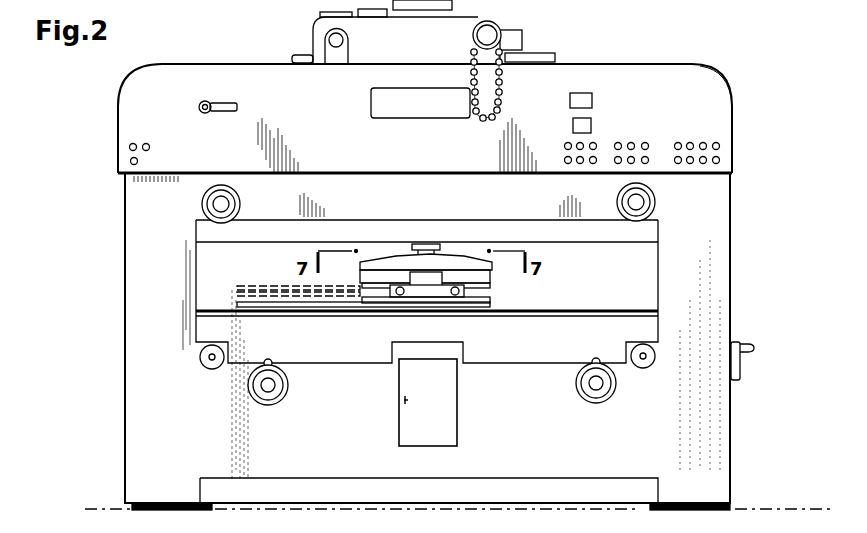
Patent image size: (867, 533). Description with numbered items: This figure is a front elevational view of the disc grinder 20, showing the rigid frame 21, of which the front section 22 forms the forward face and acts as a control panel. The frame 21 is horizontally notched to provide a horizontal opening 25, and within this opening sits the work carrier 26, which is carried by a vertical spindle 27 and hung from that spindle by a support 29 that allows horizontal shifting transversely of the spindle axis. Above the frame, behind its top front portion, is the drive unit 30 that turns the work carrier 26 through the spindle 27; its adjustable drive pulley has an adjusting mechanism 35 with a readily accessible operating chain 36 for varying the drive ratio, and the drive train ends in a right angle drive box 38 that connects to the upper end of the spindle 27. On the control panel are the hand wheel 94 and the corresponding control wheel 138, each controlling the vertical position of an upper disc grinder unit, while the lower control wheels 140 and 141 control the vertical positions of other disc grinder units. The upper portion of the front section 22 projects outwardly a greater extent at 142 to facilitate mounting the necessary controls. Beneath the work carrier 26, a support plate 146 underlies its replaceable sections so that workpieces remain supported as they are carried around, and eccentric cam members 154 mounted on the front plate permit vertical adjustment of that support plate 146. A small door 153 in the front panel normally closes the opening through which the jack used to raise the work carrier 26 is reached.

The disc grinder 20 is at (116, 294).
The rigid frame 21 is at (124, 212).
The front section 22 is at (714, 293).
The horizontal opening 25 is at (645, 273).
The work carrier 26 is at (521, 304).
The vertical spindle 27 is at (430, 248).
The support 29 is at (358, 267).
The drive unit 30 is at (307, 46).
The adjusting mechanism 35 is at (498, 26).
The operating chain 36 is at (502, 100).
The right angle drive box 38 is at (447, 11).
The hand wheel 94 is at (205, 216).
The control wheel 138 is at (655, 205).
The lower control wheel 140 is at (272, 406).
The lower control wheel 141 is at (596, 404).
The outwardly projecting upper portion 142 is at (724, 92).
The support plate 146 is at (212, 308).
The small door 153 is at (447, 415).
The eccentric cam members 154 is at (216, 368).